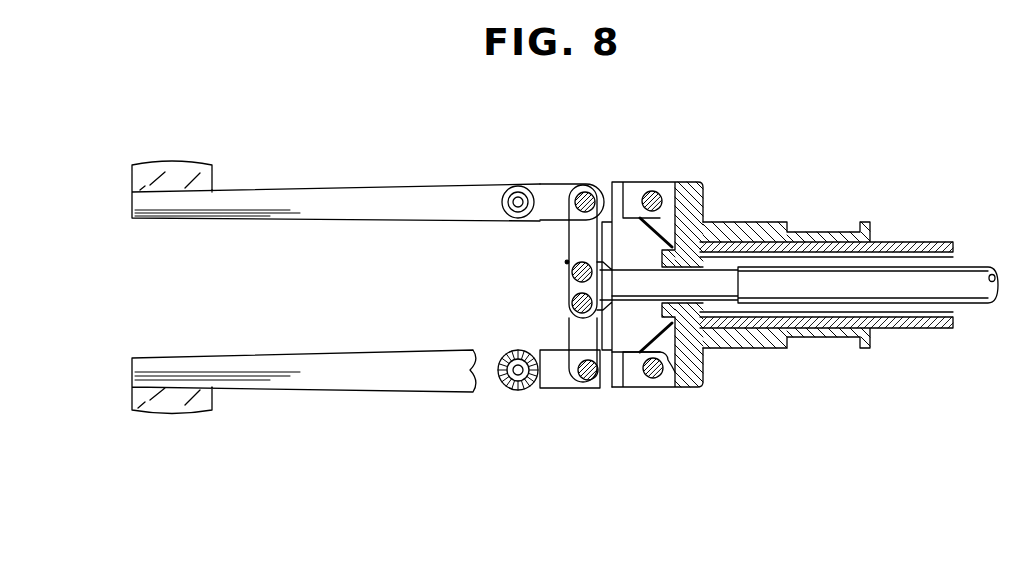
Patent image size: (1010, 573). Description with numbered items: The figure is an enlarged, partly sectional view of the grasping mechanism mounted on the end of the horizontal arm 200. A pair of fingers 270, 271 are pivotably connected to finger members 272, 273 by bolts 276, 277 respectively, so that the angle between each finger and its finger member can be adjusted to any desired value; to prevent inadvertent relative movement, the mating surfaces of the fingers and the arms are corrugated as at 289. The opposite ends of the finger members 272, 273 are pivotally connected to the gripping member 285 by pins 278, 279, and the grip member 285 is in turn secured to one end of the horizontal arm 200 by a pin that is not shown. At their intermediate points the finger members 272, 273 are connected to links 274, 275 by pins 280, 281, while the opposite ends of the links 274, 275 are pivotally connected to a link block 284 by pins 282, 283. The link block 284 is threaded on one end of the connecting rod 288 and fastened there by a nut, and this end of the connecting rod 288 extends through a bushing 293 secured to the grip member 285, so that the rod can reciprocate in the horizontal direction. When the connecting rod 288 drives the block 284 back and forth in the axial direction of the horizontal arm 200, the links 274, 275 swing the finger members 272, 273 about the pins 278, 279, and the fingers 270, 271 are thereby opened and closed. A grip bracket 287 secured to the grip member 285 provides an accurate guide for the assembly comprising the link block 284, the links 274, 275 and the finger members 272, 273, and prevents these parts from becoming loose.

The horizontal arm 200 is at (900, 332).
The finger 270 is at (372, 378).
The finger 271 is at (360, 187).
The finger member 272 is at (561, 376).
The finger member 273 is at (558, 183).
The link 274 is at (573, 338).
The link 275 is at (580, 224).
The bolt 276 is at (526, 390).
The bolt 277 is at (518, 188).
The pin 278 is at (672, 378).
The pin 279 is at (660, 195).
The pin 280 is at (591, 382).
The pin 281 is at (597, 194).
The pin 282 is at (567, 303).
The pin 283 is at (567, 262).
The link block 284 is at (571, 280).
The gripping member 285 is at (688, 230).
The grip bracket 287 is at (633, 343).
The connecting rod 288 is at (898, 268).
The corrugated mating surfaces 289 is at (512, 388).
The bushing 293 is at (665, 310).